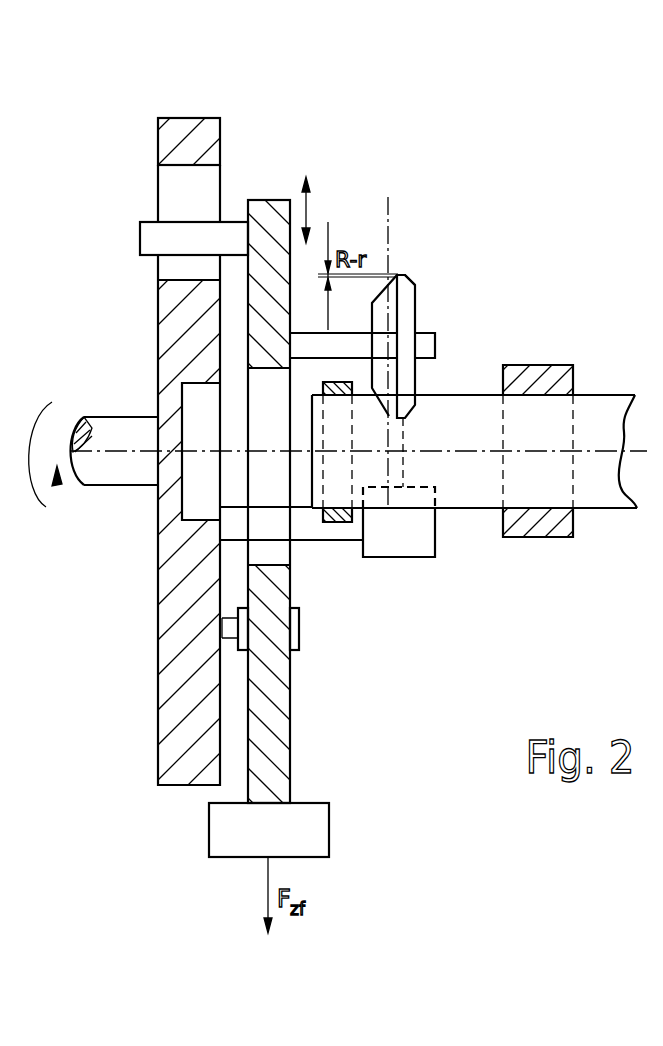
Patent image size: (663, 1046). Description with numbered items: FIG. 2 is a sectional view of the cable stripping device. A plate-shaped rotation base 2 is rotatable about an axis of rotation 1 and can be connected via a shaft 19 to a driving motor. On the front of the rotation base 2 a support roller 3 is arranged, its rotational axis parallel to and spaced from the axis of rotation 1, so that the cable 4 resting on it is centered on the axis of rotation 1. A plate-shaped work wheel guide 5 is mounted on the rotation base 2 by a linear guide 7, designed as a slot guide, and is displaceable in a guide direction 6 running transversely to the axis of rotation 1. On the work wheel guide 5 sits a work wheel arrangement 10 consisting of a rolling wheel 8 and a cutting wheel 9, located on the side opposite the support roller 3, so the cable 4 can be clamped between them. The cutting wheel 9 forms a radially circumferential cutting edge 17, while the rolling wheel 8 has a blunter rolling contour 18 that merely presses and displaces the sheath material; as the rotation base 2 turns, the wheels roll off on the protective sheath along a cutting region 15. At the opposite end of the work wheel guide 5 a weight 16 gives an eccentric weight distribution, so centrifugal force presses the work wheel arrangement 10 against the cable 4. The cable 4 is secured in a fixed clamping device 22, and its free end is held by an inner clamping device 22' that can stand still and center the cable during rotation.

The axis of rotation 1 is at (560, 452).
The rotation base 2 is at (192, 145).
The support roller 3 is at (423, 540).
The cable 4 is at (603, 420).
The work wheel guide 5 is at (263, 755).
The guide direction 6 is at (307, 210).
The linear guide 7 is at (292, 628).
The rolling wheel 8 is at (403, 327).
The cutting wheel 9 is at (378, 318).
The work wheel arrangement 10 is at (441, 290).
The cutting region 15 is at (393, 463).
The weight 16 is at (293, 817).
The cutting edge 17 is at (390, 335).
The rolling contour 18 is at (398, 273).
The shaft 19 is at (115, 437).
The clamping device 22 is at (545, 416).
The inner clamping device 22' is at (353, 505).